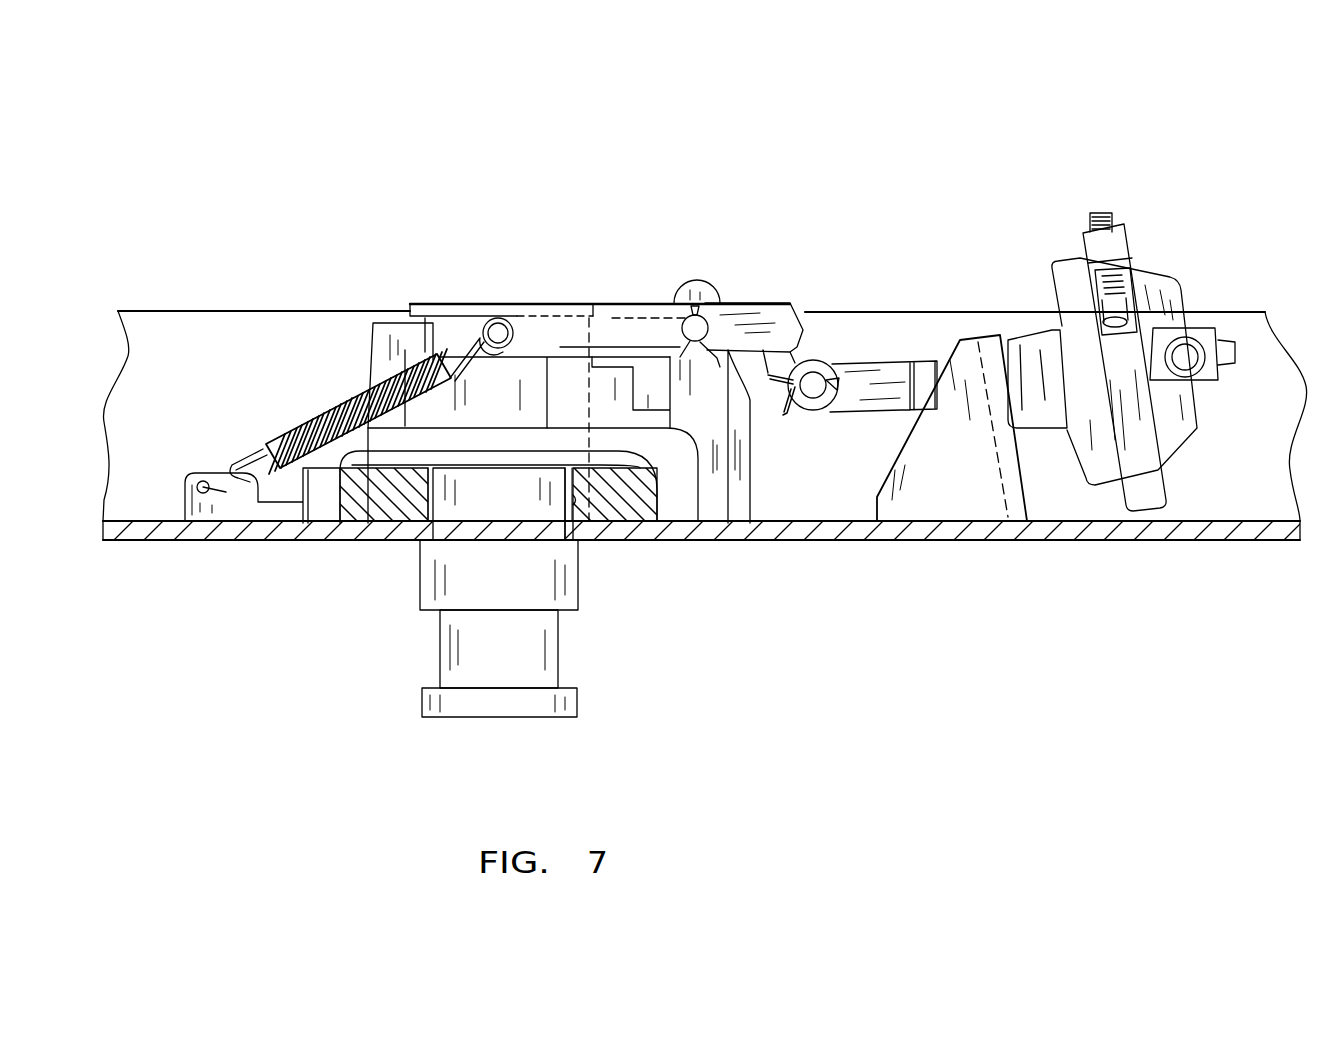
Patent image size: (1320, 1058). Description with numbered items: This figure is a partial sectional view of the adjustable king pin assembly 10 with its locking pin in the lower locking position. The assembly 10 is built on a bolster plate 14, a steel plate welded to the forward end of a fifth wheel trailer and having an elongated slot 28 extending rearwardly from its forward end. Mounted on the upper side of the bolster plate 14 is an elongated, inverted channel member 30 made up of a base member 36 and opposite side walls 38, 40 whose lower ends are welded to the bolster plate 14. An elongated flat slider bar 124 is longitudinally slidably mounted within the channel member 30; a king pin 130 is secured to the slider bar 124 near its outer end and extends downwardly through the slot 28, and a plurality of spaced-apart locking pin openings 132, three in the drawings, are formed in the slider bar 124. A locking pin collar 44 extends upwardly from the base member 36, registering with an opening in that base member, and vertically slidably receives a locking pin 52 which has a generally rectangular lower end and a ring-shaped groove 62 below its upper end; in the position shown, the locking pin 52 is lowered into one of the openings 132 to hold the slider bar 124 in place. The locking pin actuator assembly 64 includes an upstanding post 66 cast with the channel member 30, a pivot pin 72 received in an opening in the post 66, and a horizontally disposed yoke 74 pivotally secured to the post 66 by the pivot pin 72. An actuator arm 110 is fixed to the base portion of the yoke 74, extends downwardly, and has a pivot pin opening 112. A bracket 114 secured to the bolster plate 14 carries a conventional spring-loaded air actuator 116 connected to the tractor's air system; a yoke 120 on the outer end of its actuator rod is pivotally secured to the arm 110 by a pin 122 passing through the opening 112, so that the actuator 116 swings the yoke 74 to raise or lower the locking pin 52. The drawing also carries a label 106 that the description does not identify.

The adjustable king pin assembly 10 is at (965, 240).
The bolster plate 14 is at (803, 548).
The elongated slot 28 is at (608, 540).
The channel member 30 is at (322, 361).
The base member 36 is at (488, 428).
The side wall 38 is at (303, 468).
The side wall 40 is at (702, 473).
The locking pin collar 44 is at (393, 352).
The locking pin 52 is at (478, 502).
The ring-shaped groove 62 is at (580, 334).
The locking pin actuator assembly 64 is at (1103, 195).
The upstanding post 66 is at (723, 288).
The pivot pin 72 is at (687, 317).
The yoke 74 is at (758, 313).
The coil spring 106 is at (301, 417).
The actuator arm 110 is at (803, 333).
The pivot pin opening 112 is at (813, 380).
The bracket 114 is at (1011, 483).
The spring-loaded air actuator 116 is at (1165, 272).
The yoke 120 is at (873, 393).
The pin 122 is at (830, 363).
The slider bar 124 is at (385, 490).
The king pin 130 is at (470, 645).
The locking pin openings 132 is at (567, 541).